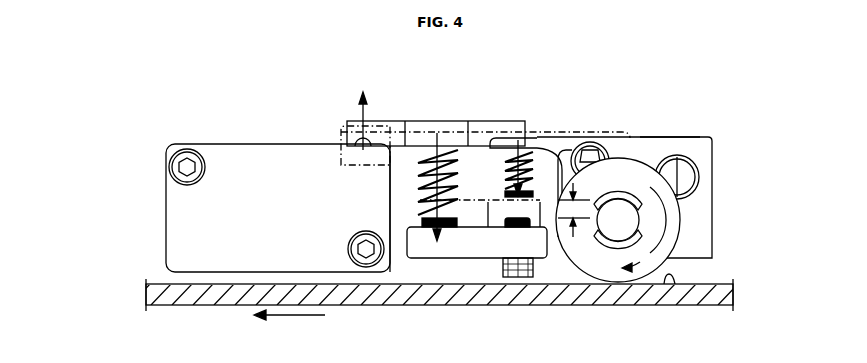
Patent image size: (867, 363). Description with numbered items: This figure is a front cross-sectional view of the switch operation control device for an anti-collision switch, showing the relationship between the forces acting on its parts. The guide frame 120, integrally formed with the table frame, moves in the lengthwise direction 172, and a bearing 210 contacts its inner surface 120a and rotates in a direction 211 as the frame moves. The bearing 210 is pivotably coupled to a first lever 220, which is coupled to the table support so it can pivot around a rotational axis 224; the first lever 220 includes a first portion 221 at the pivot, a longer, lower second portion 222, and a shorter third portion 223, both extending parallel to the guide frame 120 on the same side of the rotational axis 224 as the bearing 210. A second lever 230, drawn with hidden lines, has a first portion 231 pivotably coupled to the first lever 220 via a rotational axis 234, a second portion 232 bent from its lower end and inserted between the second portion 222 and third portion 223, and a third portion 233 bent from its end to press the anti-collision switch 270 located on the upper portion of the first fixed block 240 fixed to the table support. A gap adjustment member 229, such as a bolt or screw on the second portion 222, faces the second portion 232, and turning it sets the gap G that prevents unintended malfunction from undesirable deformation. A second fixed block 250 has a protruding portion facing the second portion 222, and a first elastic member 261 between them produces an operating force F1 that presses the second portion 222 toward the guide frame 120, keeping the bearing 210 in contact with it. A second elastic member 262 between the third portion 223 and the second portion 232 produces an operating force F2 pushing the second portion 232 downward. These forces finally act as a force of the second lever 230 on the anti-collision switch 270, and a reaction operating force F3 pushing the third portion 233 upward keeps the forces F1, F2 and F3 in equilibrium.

The guide frame 120 is at (708, 295).
The inner surface of the guide frame 120a is at (669, 285).
The lengthwise direction 172 is at (288, 316).
The first fixed block 240 is at (226, 157).
The third portion of the second lever 233 is at (385, 121).
The second lever 230 is at (572, 132).
The second fixed block 250 is at (487, 120).
The anti-collision switch 270 is at (345, 140).
The operating force F3 is at (361, 112).
The first portion of the second lever 231 is at (419, 193).
The operating force of the first elastic member F1 is at (437, 133).
The third portion of the first lever 223 is at (507, 138).
The second elastic member 262 is at (541, 230).
The operating force of the second elastic member F2 is at (520, 140).
The second portion of the second lever 232 is at (488, 203).
The second portion of the first lever 222 is at (433, 258).
The first elastic member 261 is at (405, 230).
The gap adjustment member 229 is at (516, 277).
The first lever 220 is at (712, 135).
The first portion of the first lever 221 is at (670, 137).
The rotational axis 234 is at (603, 140).
The rotational axis 224 is at (690, 184).
The bearing 210 is at (680, 222).
The rotation direction 211 is at (660, 245).
The gap G is at (578, 210).